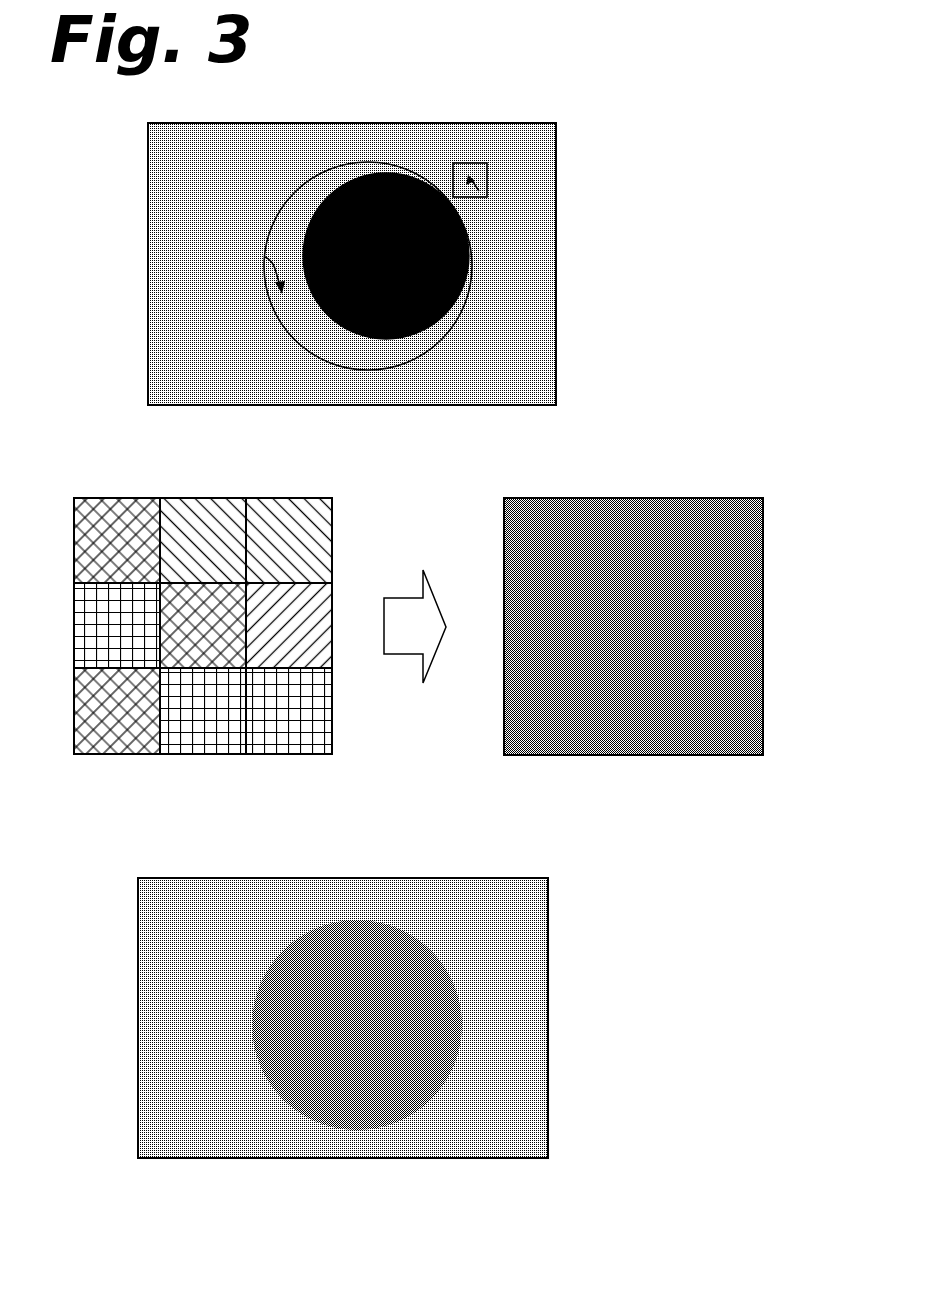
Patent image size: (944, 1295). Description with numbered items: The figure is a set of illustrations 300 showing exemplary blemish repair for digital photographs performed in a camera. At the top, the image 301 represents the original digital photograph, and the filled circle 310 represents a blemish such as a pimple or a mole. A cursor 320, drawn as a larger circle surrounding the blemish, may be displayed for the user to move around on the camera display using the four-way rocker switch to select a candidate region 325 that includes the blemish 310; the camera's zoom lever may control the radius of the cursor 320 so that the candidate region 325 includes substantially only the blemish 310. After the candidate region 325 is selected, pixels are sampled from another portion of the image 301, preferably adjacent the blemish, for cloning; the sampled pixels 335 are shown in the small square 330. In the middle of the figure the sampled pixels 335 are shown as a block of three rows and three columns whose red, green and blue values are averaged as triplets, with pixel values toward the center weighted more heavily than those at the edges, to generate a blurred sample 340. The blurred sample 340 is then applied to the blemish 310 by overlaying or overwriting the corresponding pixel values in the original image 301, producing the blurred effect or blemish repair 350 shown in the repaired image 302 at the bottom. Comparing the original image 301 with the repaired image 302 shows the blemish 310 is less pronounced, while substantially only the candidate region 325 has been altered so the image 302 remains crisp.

The illustrations 300 is at (686, 165).
The image 301 is at (148, 258).
The image 302 is at (138, 1013).
The blemish 310 is at (366, 338).
The cursor 320 is at (291, 197).
The candidate region 325 is at (265, 257).
The square 330 is at (472, 163).
The sampled pixels 335 is at (475, 197).
The blurred sample 340 is at (598, 498).
The blemish repair 350 is at (281, 950).